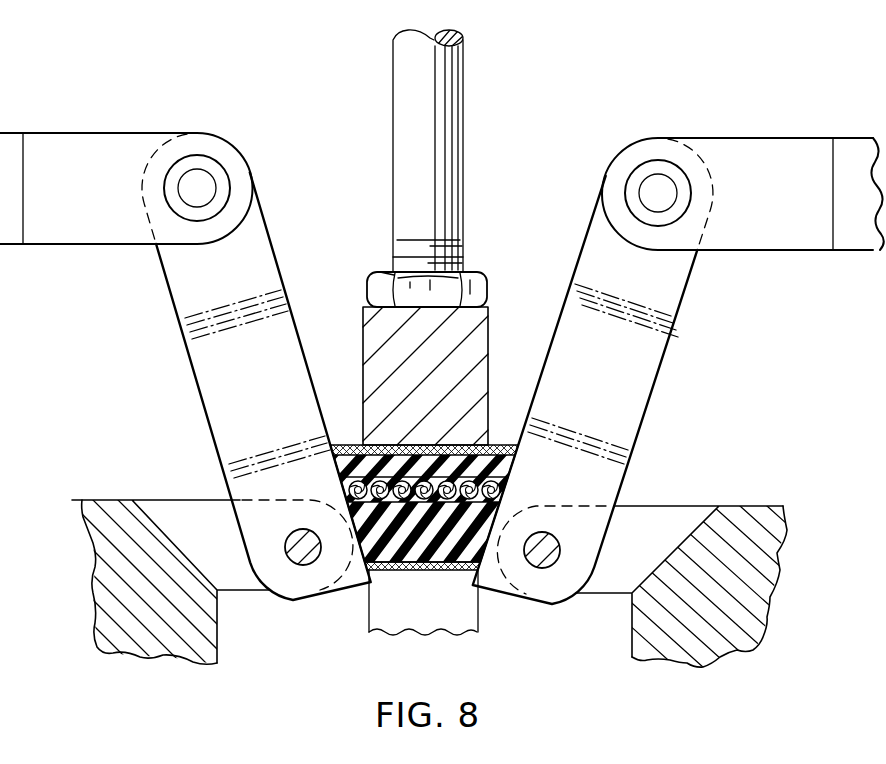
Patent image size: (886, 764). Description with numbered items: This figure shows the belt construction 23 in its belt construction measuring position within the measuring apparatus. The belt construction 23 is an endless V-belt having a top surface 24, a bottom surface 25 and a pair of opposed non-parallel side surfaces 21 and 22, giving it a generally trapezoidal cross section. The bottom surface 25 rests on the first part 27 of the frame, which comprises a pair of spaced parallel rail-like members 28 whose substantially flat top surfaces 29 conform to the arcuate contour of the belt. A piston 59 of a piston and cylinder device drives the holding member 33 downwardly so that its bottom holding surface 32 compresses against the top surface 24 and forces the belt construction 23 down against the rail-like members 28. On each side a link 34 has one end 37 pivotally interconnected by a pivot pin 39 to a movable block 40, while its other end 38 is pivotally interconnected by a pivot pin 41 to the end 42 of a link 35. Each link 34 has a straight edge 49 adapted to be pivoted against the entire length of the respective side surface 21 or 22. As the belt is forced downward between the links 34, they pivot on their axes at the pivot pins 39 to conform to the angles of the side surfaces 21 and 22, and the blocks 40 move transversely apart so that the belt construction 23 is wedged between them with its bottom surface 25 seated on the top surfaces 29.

The side surface 21 is at (350, 507).
The side surface 22 is at (505, 505).
The endless power transmission belt construction 23 is at (419, 504).
The top surface 24 is at (338, 438).
The bottom surface 25 is at (410, 573).
The first part 27 is at (460, 620).
The rail-like members 28 is at (409, 621).
The top surfaces 29 is at (496, 523).
The bottom holding surface 32 is at (503, 452).
The holding member 33 is at (378, 337).
The link 34 is at (188, 352).
The link 35 is at (81, 133).
The end 37 is at (253, 528).
The end 38 is at (263, 232).
The pivot pin 39 is at (296, 547).
The movable block 40 is at (108, 603).
The pivot pin 41 is at (207, 185).
The end 42 is at (160, 133).
The straight edge 49 is at (561, 308).
The piston 59 is at (463, 78).